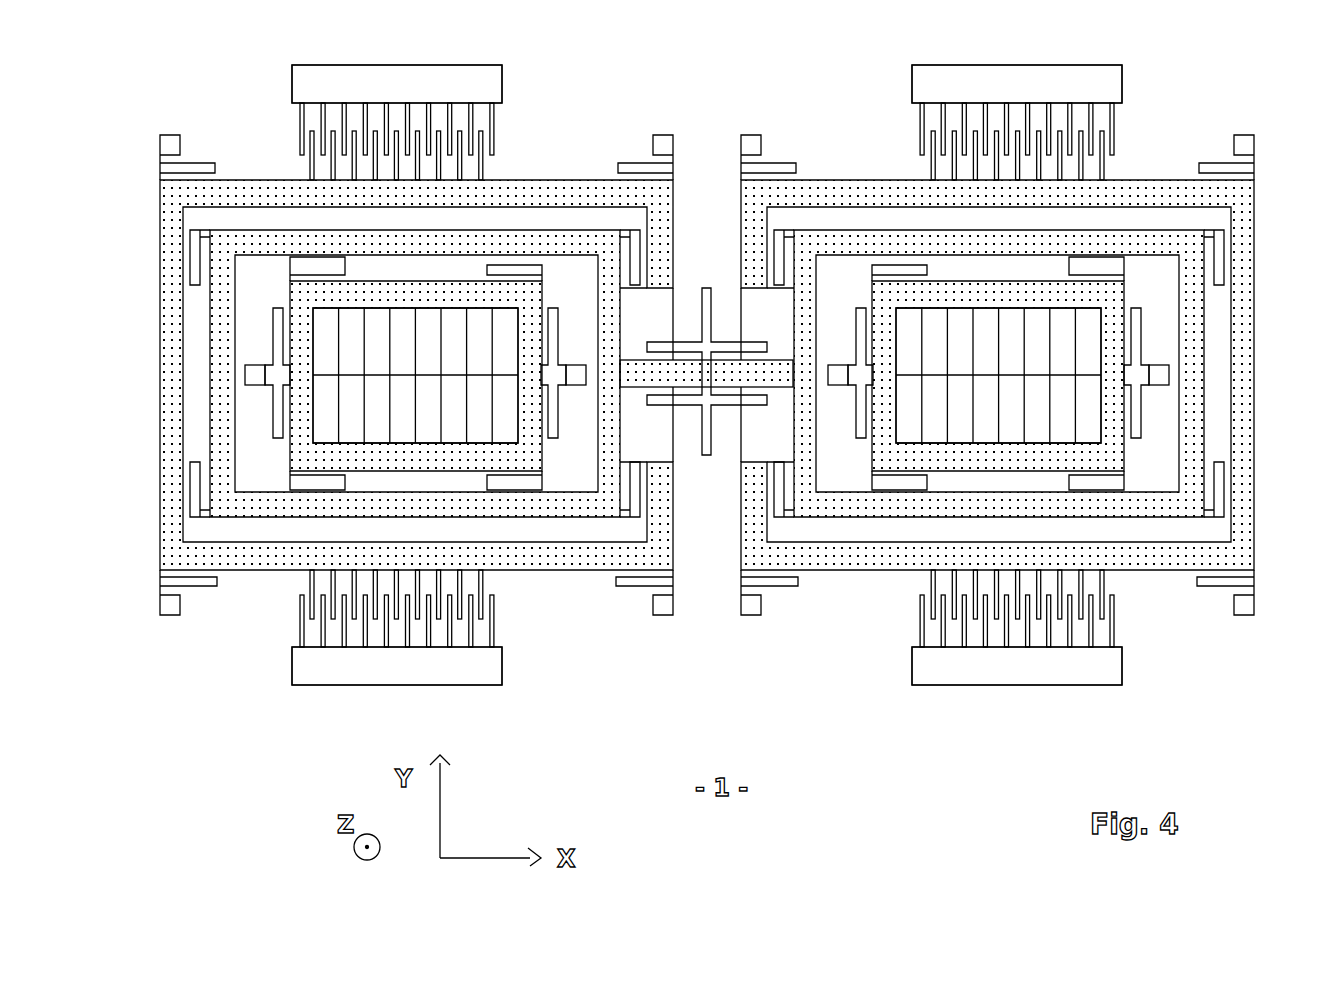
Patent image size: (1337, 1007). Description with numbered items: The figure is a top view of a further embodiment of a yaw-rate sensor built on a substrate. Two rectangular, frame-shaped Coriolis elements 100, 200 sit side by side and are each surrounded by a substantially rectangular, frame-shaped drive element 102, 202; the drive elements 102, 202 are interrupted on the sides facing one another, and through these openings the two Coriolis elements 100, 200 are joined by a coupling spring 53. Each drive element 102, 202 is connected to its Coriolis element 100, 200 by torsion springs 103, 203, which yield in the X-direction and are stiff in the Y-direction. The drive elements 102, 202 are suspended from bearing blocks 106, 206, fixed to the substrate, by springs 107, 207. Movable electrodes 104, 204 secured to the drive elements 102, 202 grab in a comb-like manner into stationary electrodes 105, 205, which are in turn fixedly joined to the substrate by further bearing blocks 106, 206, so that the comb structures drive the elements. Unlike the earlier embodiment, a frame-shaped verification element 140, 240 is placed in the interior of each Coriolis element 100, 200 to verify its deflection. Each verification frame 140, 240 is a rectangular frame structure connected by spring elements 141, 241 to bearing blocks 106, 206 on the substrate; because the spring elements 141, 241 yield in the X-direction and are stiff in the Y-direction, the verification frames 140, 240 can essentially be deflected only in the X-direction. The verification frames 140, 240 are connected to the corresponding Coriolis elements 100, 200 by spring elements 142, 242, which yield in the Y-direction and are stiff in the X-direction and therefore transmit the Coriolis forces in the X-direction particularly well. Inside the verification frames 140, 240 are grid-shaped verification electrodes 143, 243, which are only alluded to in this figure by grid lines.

The coupling spring 53 is at (705, 455).
The first Coriolis element 100 is at (212, 307).
The drive element 102 is at (167, 223).
The torsion spring 103 is at (193, 259).
The movable electrode 104 is at (482, 170).
The stationary electrode 105 is at (503, 97).
The bearing block 106 is at (303, 82).
The spring 107 is at (188, 163).
The verification element 140 is at (300, 352).
The spring element 141 is at (277, 333).
The spring element 142 is at (305, 268).
The verification electrode 143 is at (495, 430).
The second Coriolis element 200 is at (1195, 453).
The drive element 202 is at (1242, 550).
The torsion spring 203 is at (1217, 492).
The movable electrode 204 is at (932, 586).
The stationary electrode 205 is at (918, 648).
The bearing block 206 is at (1155, 383).
The spring 207 is at (1212, 587).
The verification element 240 is at (1107, 442).
The spring element 241 is at (1143, 410).
The spring element 242 is at (1100, 487).
The verification electrode 243 is at (917, 407).